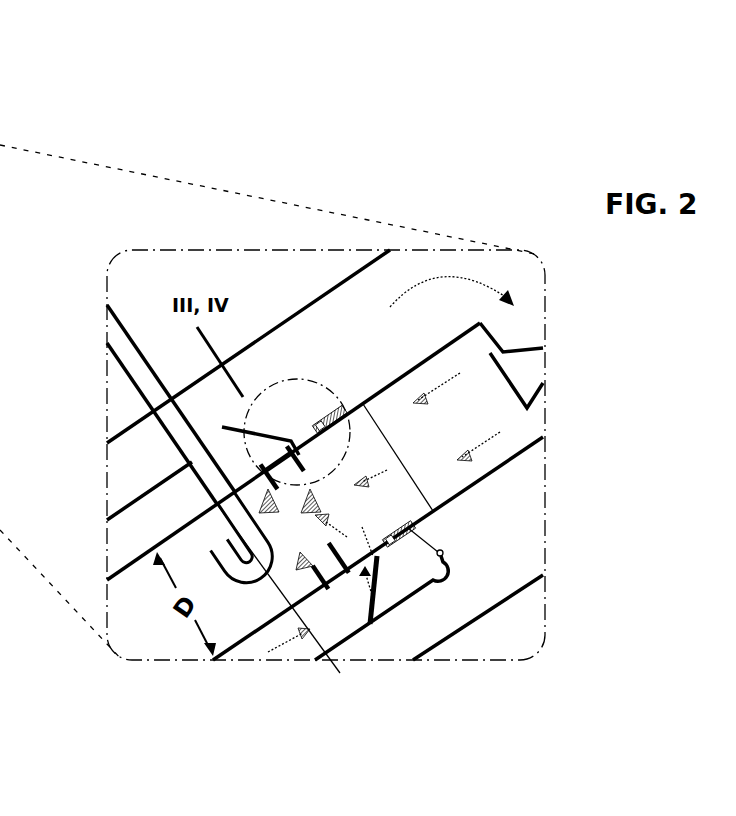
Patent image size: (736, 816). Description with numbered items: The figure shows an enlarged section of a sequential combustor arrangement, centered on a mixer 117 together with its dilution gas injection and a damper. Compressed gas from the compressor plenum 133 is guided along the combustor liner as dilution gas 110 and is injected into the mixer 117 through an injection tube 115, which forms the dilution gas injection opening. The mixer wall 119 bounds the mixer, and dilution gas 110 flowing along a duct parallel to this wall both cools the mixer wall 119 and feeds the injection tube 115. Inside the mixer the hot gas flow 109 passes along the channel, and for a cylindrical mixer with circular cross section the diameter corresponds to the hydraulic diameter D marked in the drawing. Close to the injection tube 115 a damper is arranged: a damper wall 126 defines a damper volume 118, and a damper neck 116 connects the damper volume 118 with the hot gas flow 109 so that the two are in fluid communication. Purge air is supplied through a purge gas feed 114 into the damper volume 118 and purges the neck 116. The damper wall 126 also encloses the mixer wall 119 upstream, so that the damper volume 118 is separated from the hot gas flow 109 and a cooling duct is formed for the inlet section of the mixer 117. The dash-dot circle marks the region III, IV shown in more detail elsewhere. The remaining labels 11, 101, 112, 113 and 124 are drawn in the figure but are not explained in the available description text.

The receptacle 11 is at (150, 520).
The dispensing channel 101 is at (428, 438).
The hot gas flow 109 is at (440, 390).
The dilution gas 110 is at (291, 645).
The channel inlet tab 112 is at (535, 368).
The dispensing device region 113 is at (152, 627).
The purge gas feed 114 is at (190, 467).
The injection tube 115 is at (281, 425).
The damper neck 116 is at (314, 412).
The mixer 117 is at (374, 563).
The damper volume 118 is at (263, 413).
The mixer wall 119 is at (318, 594).
The feed band 124 is at (139, 374).
The damper wall 126 is at (427, 593).
The compressor plenum 133 is at (493, 522).